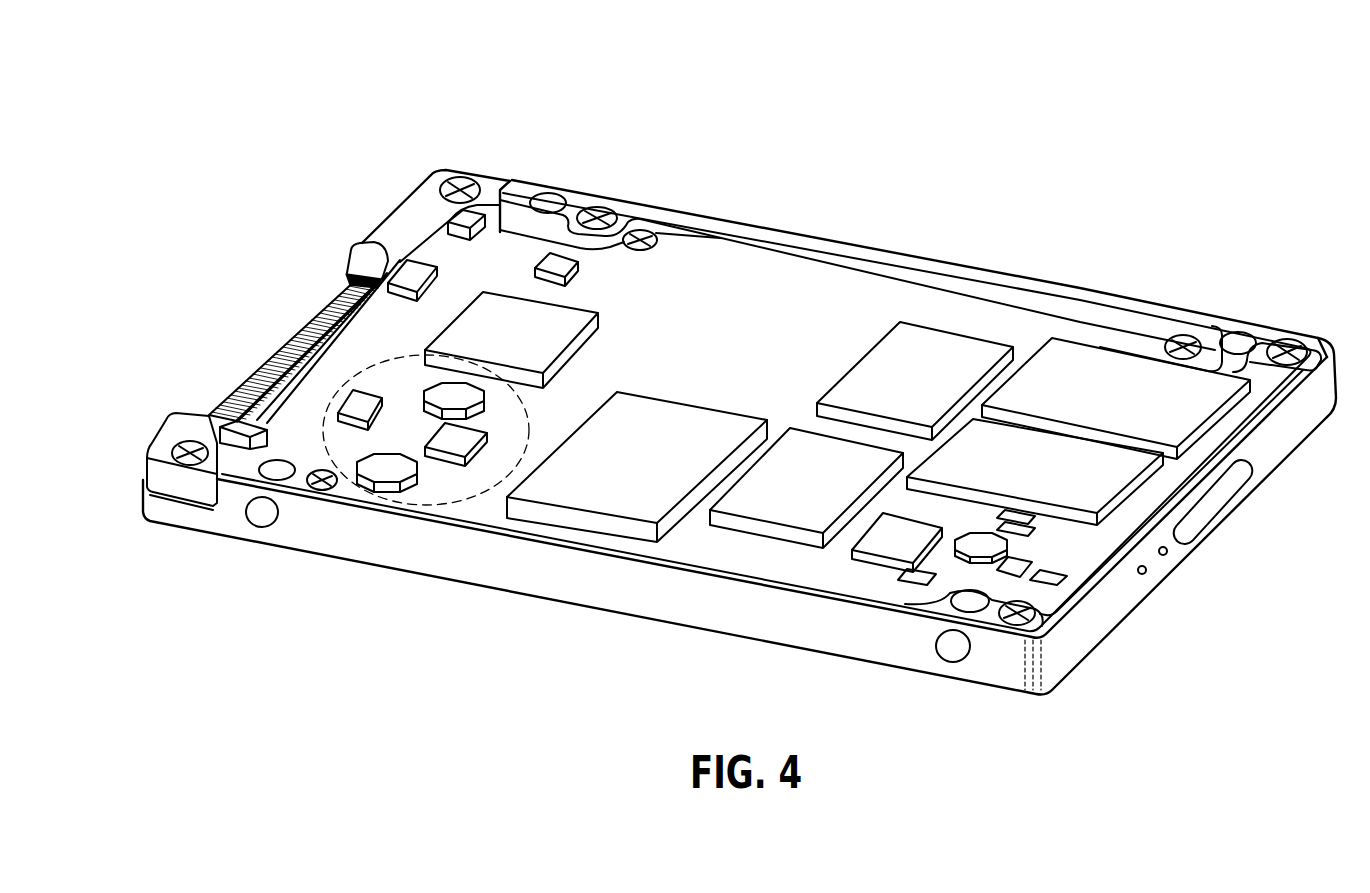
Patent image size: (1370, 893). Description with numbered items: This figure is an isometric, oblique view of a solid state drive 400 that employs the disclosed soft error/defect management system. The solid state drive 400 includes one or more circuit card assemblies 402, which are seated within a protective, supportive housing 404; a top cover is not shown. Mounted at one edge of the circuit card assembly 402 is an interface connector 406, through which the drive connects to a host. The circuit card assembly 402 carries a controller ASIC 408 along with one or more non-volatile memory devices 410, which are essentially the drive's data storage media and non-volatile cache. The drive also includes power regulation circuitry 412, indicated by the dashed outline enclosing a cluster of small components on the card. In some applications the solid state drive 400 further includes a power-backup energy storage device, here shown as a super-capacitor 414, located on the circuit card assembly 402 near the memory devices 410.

The solid state drive 400 is at (975, 185).
The circuit card assembly 402 is at (838, 280).
The housing 404 is at (473, 582).
The interface connector 406 is at (313, 305).
The controller ASIC 408 is at (493, 333).
The non-volatile memory device 410 is at (1137, 393).
The power regulation circuitry 412 is at (393, 510).
The super-capacitor 414 is at (647, 467).